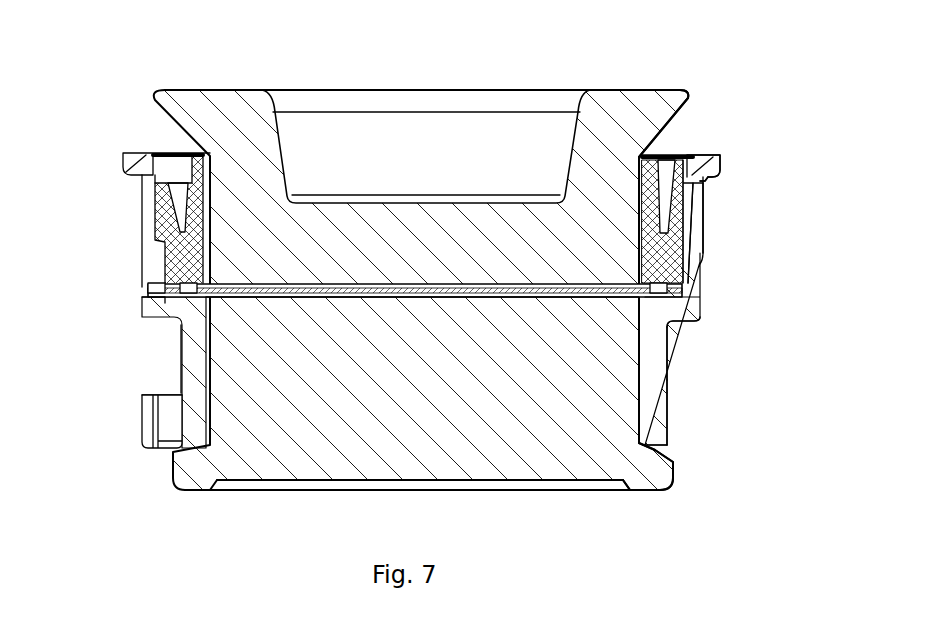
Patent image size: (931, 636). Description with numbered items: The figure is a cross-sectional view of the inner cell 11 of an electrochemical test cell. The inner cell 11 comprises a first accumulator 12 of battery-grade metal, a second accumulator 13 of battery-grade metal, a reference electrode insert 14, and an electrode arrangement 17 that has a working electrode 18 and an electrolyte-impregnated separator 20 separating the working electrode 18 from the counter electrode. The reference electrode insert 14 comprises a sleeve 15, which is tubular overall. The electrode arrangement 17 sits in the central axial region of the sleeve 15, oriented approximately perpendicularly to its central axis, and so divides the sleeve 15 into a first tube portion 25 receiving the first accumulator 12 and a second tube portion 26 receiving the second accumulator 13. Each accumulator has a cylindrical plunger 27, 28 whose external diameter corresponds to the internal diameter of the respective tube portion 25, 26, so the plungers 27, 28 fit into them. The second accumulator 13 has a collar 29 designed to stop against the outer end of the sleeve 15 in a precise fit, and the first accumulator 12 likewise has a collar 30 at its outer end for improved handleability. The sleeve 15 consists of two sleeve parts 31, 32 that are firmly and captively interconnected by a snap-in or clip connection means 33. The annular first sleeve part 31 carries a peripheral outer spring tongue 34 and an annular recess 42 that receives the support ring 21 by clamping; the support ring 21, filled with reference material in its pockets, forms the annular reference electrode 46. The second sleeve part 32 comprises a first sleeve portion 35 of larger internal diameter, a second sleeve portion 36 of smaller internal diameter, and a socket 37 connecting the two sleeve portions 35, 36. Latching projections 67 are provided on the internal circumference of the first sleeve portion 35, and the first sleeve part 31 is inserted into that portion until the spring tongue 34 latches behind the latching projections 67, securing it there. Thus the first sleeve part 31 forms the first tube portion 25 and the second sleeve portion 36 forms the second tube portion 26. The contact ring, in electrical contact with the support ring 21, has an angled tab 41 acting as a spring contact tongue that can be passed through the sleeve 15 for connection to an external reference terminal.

The inner cell 11 is at (737, 337).
The first accumulator 12 is at (632, 90).
The second accumulator 13 is at (505, 482).
The reference electrode insert 14 is at (671, 380).
The sleeve 15 is at (144, 339).
The electrode arrangement 17 is at (507, 298).
The working electrode 18 is at (563, 283).
The electrolyte-impregnated separator 20 is at (363, 298).
The support ring 21 is at (150, 290).
The first tube portion 25 is at (650, 207).
The second tube portion 26 is at (632, 380).
The cylindrical plunger 27 is at (432, 253).
The cylindrical plunger 28 is at (432, 415).
The collar 29 is at (647, 460).
The collar 30 is at (658, 110).
The first sleeve part 31 is at (705, 236).
The second sleeve part 32 is at (671, 347).
The clip connection means 33 is at (706, 179).
The spring tongue 34 is at (147, 190).
The first sleeve portion 35 is at (692, 255).
The second sleeve portion 36 is at (653, 422).
The socket 37 is at (660, 307).
The angled tab 41 is at (153, 369).
The annular recess 42 is at (147, 300).
The reference electrode 46 is at (153, 278).
The latching projection 67 is at (700, 156).